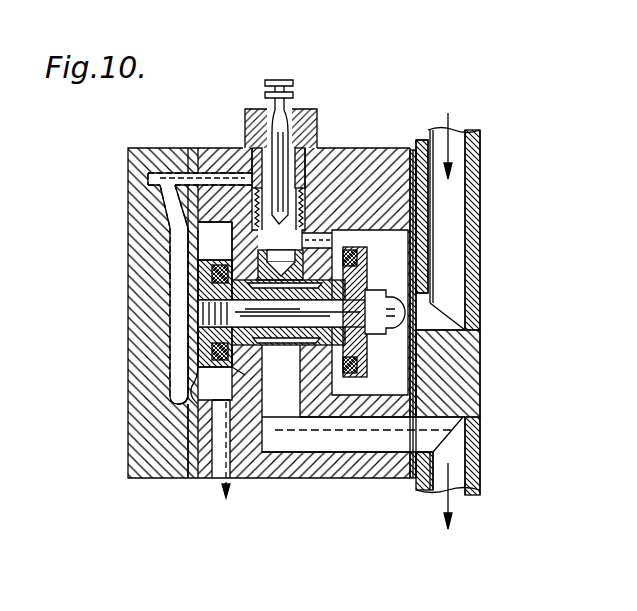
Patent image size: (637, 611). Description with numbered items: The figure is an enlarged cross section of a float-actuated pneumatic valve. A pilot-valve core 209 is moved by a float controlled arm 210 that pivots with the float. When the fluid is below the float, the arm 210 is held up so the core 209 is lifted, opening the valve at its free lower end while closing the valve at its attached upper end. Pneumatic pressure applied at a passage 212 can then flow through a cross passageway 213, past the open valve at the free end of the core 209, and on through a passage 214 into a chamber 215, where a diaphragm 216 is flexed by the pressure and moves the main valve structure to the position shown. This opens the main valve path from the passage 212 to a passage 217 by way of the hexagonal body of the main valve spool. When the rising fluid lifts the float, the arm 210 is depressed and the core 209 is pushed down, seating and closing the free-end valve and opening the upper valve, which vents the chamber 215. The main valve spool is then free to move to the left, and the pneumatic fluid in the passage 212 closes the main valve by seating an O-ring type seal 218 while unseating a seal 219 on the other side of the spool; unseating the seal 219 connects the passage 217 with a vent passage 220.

The pilot-valve core 209 is at (277, 141).
The float controlled arm 210 is at (282, 80).
The passage 212 is at (458, 146).
The cross passageway 213 is at (325, 215).
The passage 214 is at (178, 184).
The chamber 215 is at (180, 303).
The diaphragm 216 is at (188, 352).
The passage 217 is at (363, 434).
The O-ring type seal 218 is at (364, 264).
The seal 219 is at (231, 259).
The vent passage 220 is at (242, 457).